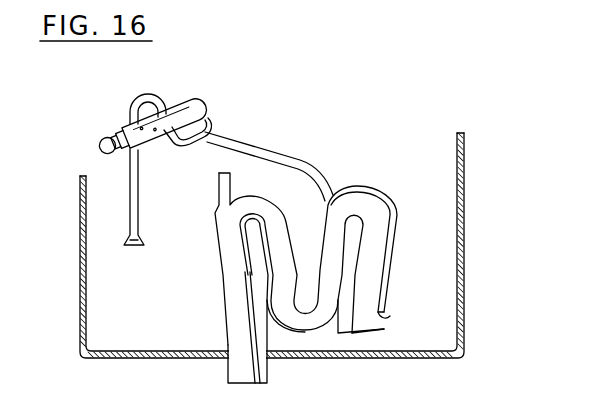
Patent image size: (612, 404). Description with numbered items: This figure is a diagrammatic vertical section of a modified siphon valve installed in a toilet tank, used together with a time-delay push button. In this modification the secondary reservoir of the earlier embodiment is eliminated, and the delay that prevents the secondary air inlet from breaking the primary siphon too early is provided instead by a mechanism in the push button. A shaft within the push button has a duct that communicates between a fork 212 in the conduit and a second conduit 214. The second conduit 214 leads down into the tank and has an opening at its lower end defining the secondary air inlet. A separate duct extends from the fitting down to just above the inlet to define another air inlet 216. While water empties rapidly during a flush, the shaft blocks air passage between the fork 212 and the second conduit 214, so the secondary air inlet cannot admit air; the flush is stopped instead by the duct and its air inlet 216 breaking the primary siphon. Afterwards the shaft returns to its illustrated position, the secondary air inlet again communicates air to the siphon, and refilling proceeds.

The fork 212 is at (214, 123).
The second conduit 214 is at (131, 107).
The air inlet 216 is at (384, 318).